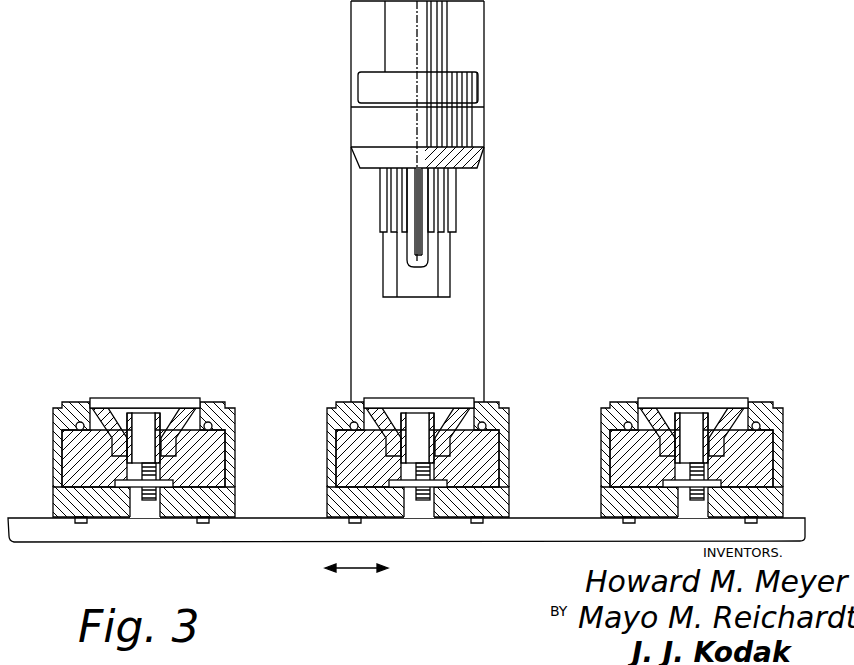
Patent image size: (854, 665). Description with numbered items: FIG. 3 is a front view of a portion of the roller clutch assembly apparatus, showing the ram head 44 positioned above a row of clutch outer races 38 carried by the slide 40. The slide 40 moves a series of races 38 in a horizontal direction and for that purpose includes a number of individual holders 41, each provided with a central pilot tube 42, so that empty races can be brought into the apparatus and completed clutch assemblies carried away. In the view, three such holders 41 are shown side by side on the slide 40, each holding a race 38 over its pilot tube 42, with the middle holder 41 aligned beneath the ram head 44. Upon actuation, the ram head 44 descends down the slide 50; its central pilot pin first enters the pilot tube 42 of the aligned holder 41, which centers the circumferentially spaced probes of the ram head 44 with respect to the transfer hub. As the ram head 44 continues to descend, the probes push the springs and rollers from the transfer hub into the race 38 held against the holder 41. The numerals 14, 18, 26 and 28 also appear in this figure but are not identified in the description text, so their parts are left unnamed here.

The clamp member 14 is at (660, 413).
The clamp member 18 is at (727, 410).
The central tube 26 is at (427, 250).
The pins 28 is at (407, 205).
The clutch outer race 38 is at (222, 408).
The slide 40 is at (207, 503).
The holder 41 is at (215, 466).
The central pilot tube 42 is at (147, 485).
The ram head 44 is at (463, 128).
The slide 50 is at (442, 282).